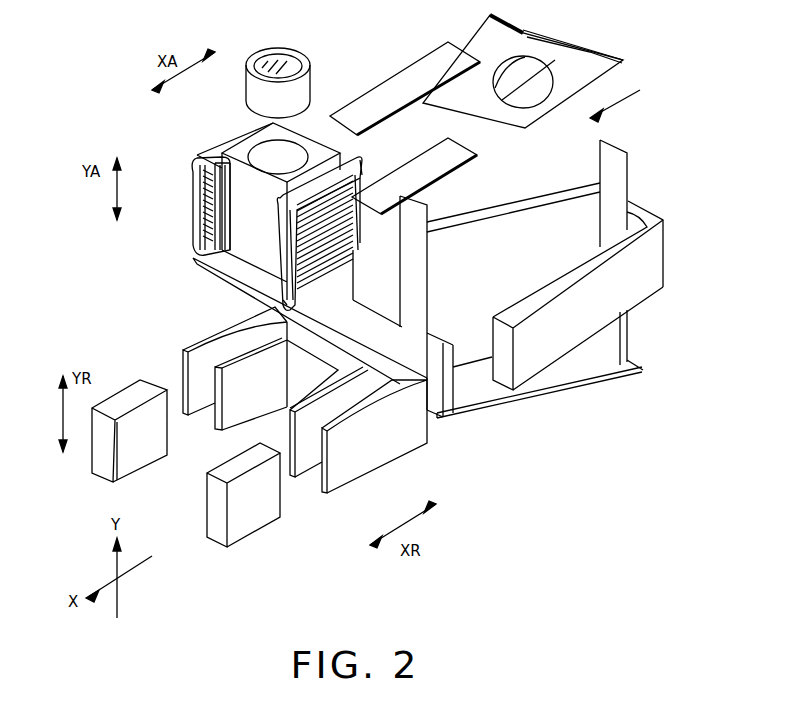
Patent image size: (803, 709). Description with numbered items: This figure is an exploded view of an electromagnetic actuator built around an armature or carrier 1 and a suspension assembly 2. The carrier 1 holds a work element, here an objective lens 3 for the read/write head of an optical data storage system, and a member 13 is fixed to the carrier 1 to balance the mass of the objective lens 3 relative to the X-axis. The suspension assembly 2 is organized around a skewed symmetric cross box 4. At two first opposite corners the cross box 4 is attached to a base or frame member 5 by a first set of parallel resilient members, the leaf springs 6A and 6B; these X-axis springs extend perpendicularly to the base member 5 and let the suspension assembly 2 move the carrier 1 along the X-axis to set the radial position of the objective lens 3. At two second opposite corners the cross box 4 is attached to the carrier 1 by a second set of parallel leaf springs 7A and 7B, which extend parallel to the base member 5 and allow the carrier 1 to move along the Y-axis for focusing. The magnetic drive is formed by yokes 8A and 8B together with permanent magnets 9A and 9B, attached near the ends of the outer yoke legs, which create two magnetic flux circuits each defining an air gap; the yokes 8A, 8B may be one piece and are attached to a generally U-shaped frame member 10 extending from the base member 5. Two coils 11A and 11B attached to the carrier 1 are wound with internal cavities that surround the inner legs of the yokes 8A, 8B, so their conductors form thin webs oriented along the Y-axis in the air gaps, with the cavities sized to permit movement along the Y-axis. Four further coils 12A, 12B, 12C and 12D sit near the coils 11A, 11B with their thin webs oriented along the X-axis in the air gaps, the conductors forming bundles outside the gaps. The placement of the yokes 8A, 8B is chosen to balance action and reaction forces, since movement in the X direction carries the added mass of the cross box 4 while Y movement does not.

The armature or carrier 1 is at (325, 160).
The suspension assembly 2 is at (618, 104).
The objective lens 3 is at (283, 57).
The skewed symmetric cross box 4 is at (575, 50).
The base or frame member 5 is at (600, 377).
The leaf spring 6A is at (420, 207).
The leaf spring 6B is at (618, 168).
The leaf spring 7A is at (402, 82).
The leaf spring 7B is at (462, 147).
The yoke 8A is at (307, 462).
The yoke 8B is at (183, 350).
The permanent magnet 9A is at (262, 520).
The permanent magnet 9B is at (143, 455).
The U-shaped frame member 10 is at (542, 353).
The coil 11A is at (280, 273).
The coil 11B is at (210, 248).
The coil 12A is at (355, 280).
The coil 12B is at (360, 162).
The coil 12C is at (203, 190).
The coil 12D is at (206, 228).
The member 13 is at (220, 272).